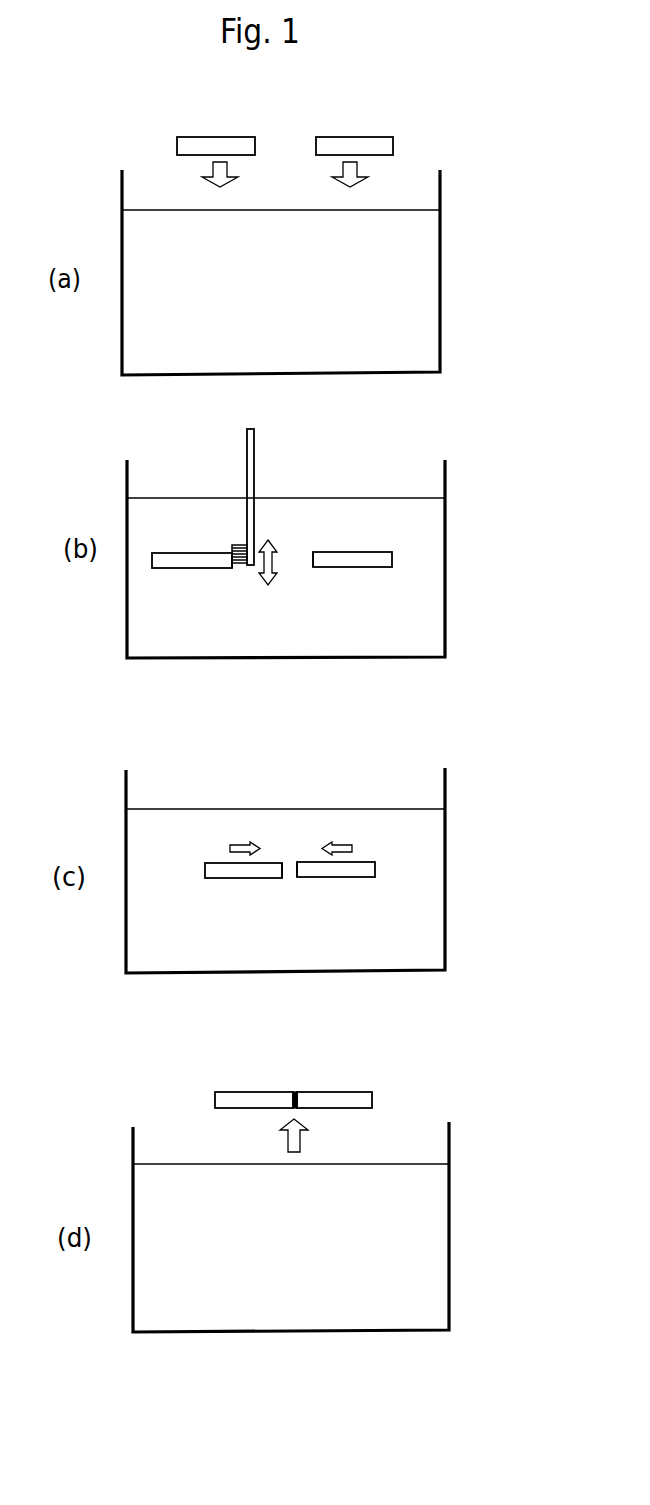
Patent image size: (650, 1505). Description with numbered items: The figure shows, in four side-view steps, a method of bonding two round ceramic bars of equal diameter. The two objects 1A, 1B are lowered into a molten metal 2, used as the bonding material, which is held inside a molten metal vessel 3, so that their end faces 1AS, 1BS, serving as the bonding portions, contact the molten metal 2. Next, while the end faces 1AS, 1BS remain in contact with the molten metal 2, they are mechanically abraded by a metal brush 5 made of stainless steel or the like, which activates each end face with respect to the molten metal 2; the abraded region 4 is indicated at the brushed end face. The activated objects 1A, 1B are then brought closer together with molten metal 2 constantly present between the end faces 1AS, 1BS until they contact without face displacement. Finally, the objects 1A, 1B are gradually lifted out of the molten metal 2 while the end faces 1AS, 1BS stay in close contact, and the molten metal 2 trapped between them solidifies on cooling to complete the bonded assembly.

The object to be bonded 1A is at (208, 137).
The object to be bonded 1B is at (341, 137).
The round-bar end face 1AS is at (240, 566).
The round-bar end face 1BS is at (313, 558).
The molten metal 2 is at (410, 270).
The molten metal vessel 3 is at (441, 340).
The abrasive grains / abrasive material 4 is at (233, 564).
The metal brush 5 is at (254, 462).